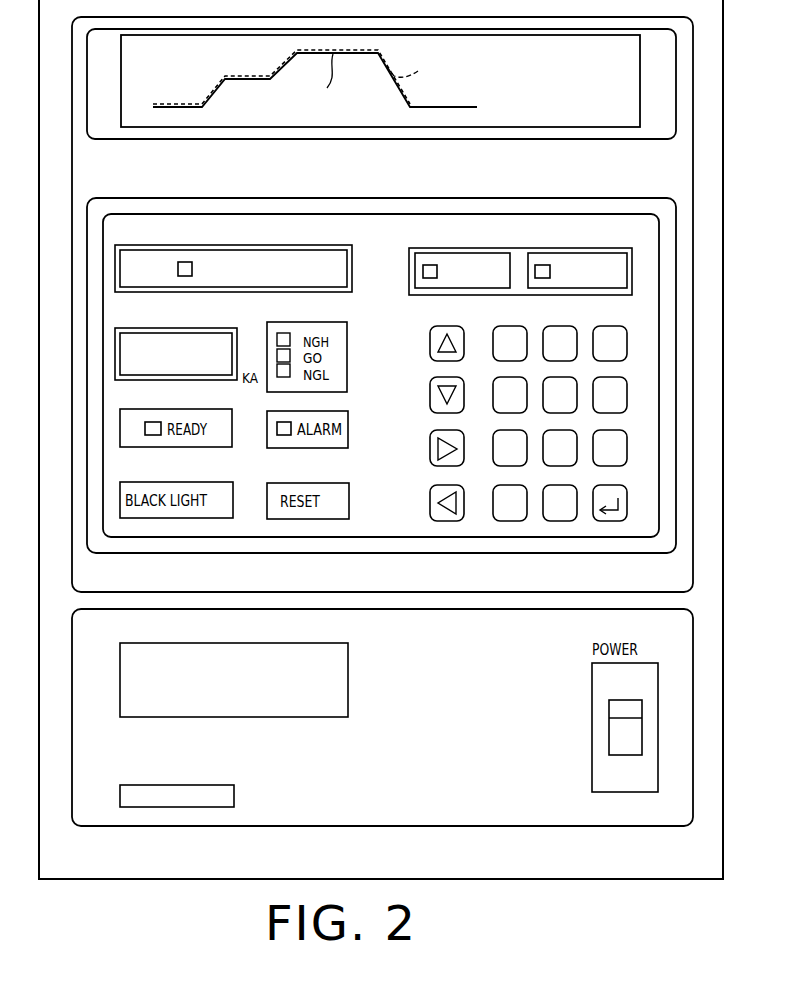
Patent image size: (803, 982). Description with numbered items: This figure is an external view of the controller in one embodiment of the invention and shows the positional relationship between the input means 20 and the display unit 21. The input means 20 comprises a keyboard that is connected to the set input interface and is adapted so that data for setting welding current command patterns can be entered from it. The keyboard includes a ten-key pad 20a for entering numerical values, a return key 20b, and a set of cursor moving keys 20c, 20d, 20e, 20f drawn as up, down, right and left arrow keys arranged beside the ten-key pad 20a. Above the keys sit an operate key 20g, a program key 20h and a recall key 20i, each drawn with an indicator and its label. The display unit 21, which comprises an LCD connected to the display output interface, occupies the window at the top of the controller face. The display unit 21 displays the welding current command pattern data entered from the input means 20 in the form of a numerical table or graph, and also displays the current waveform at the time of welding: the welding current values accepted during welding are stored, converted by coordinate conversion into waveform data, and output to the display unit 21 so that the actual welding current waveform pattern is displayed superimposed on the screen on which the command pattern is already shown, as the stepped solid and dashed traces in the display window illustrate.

The input means 20 is at (570, 429).
The ten-key pad 20a is at (623, 413).
The return key 20b is at (626, 512).
The cursor moving key 20c is at (430, 344).
The cursor moving key 20d is at (433, 401).
The cursor moving key 20e is at (433, 449).
The cursor moving key 20f is at (433, 504).
The operate key 20g is at (250, 253).
The program key 20h is at (448, 253).
The recall key 20i is at (562, 253).
The display unit 21 is at (641, 38).